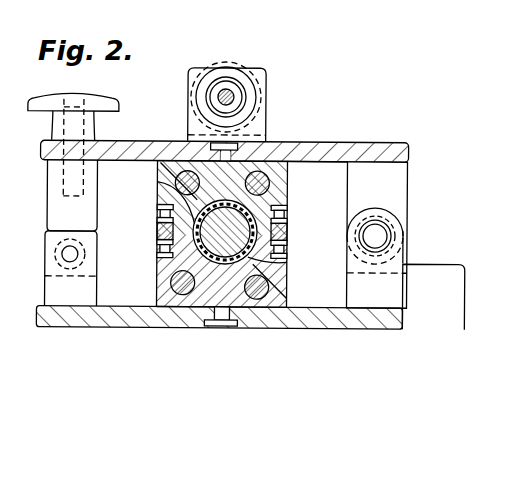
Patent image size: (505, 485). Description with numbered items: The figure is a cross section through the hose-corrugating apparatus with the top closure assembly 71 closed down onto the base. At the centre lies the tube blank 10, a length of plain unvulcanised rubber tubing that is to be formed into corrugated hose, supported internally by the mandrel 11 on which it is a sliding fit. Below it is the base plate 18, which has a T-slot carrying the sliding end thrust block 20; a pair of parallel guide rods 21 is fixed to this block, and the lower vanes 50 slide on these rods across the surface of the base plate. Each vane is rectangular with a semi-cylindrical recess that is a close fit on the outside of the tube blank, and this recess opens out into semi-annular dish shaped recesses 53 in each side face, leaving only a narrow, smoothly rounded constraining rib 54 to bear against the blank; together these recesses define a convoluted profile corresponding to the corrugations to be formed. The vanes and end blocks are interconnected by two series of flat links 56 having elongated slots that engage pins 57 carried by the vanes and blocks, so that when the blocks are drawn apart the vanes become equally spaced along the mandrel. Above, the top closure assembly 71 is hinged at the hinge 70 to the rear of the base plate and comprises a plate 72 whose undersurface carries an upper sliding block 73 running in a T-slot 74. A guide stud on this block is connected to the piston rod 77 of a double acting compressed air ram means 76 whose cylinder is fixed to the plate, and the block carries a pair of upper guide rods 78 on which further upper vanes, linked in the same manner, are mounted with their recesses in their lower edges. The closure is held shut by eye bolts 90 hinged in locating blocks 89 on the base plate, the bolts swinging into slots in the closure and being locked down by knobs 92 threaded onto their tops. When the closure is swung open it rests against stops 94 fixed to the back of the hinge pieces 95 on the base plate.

The tube blank 10 is at (203, 197).
The mandrel 11 is at (287, 268).
The base plate 18 is at (286, 320).
The sliding end thrust block 20 is at (157, 291).
The guide rods 21 is at (177, 290).
The vanes 50 is at (156, 254).
The semi-annular dish shaped recesses 53 is at (190, 330).
The constraining rib 54 is at (236, 321).
The links 56 is at (284, 208).
The pins 57 is at (160, 212).
The hinge 70 is at (380, 235).
The top closure assembly 71 is at (391, 143).
The plate 72 is at (337, 157).
The upper sliding block 73 is at (297, 172).
The T-slot 74 is at (222, 150).
The ram means 76 is at (210, 64).
The piston rod 77 is at (222, 96).
The guide rods 78 is at (181, 186).
The locating blocks 89 is at (97, 256).
The eye bolts 90 is at (84, 197).
The knobs 92 is at (55, 105).
The stops 94 is at (452, 318).
The hinge pieces 95 is at (405, 257).